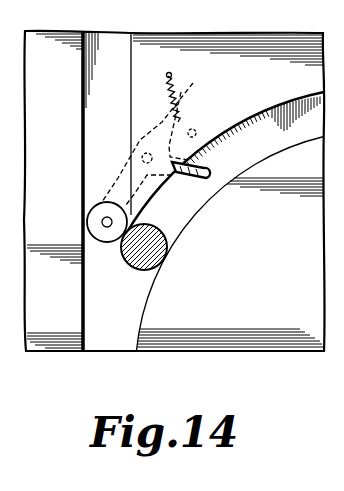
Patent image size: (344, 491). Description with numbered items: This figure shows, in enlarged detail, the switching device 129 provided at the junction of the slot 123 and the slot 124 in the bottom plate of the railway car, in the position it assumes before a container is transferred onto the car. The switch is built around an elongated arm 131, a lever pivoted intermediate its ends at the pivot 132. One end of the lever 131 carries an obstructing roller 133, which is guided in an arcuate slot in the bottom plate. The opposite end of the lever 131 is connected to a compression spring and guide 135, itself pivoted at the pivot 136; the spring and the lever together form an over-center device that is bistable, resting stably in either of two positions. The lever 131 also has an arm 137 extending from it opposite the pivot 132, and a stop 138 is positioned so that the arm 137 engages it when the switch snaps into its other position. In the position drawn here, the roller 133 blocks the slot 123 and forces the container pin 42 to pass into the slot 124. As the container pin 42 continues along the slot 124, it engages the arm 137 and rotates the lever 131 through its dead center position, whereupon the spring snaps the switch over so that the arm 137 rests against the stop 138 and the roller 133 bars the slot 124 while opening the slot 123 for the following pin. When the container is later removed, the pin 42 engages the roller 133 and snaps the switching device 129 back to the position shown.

The slot 123 is at (89, 281).
The slot 124 is at (205, 203).
The switching device 129 is at (120, 158).
The elongated arm 131 is at (113, 184).
The pivot 132 is at (139, 140).
The obstructing roller 133 is at (87, 219).
The compression spring and guide 135 is at (178, 100).
The pivot 136 is at (180, 95).
The arm 137 is at (203, 166).
The stop 138 is at (210, 122).
The container pin 42 is at (168, 257).